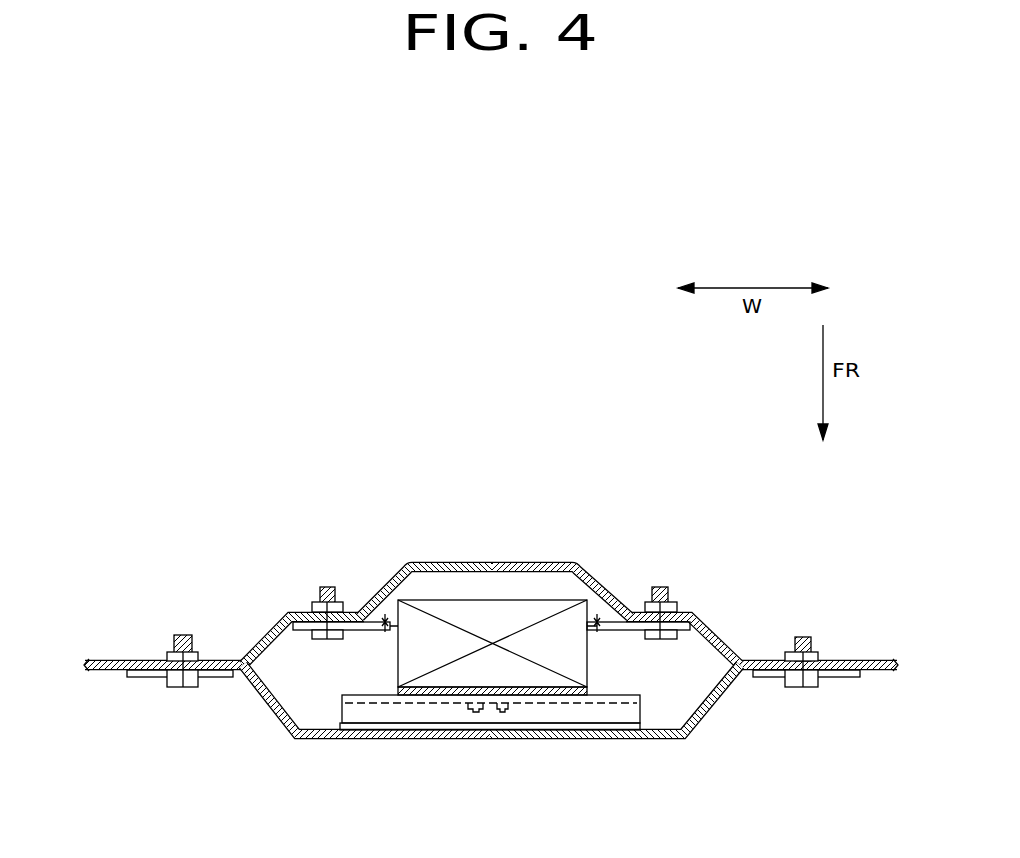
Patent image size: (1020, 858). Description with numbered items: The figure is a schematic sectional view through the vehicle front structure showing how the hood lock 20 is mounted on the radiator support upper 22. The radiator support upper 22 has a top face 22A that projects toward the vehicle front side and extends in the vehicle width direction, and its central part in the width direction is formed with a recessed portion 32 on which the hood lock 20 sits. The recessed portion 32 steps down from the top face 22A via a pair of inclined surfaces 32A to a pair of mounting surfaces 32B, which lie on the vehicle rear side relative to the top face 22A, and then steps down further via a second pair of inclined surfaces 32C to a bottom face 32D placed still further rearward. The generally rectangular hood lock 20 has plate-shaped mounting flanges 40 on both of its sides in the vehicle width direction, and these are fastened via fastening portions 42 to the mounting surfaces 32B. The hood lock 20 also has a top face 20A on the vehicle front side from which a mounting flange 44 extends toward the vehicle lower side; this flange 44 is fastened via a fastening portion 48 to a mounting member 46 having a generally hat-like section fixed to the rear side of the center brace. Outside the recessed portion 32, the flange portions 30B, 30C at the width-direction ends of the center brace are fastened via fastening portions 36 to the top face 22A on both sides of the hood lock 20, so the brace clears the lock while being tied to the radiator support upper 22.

The hood lock 20 is at (492, 650).
The top face of the hood lock 20A is at (448, 696).
The radiator support upper 22 is at (151, 703).
The top face of the radiator support upper 22A is at (100, 672).
The flange portion 30B is at (213, 678).
The flange portion 30C is at (837, 680).
The recessed portion 32 is at (496, 659).
The inclined surface 32A is at (264, 700).
The mounting surface 32B is at (352, 631).
The inclined surface 32C is at (404, 588).
The bottom face 32D is at (467, 585).
The fastening portion 36 is at (183, 689).
The mounting flange 40 is at (377, 631).
The fastening portion 42 is at (328, 640).
The mounting flange 44 is at (537, 712).
The mounting member 46 is at (620, 731).
The fastening portion 48 is at (492, 714).